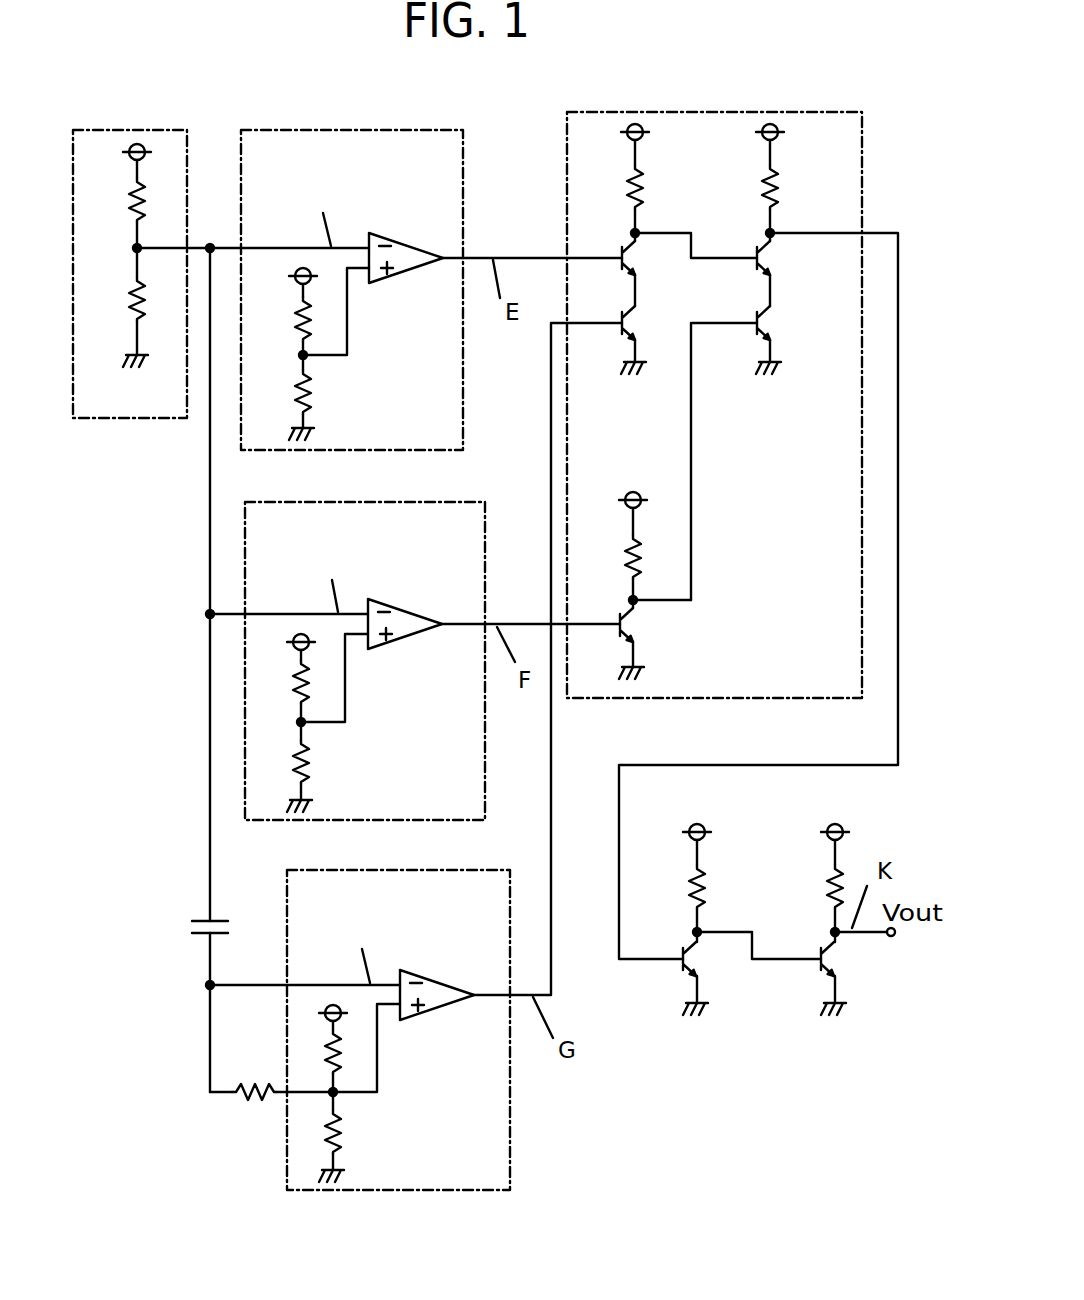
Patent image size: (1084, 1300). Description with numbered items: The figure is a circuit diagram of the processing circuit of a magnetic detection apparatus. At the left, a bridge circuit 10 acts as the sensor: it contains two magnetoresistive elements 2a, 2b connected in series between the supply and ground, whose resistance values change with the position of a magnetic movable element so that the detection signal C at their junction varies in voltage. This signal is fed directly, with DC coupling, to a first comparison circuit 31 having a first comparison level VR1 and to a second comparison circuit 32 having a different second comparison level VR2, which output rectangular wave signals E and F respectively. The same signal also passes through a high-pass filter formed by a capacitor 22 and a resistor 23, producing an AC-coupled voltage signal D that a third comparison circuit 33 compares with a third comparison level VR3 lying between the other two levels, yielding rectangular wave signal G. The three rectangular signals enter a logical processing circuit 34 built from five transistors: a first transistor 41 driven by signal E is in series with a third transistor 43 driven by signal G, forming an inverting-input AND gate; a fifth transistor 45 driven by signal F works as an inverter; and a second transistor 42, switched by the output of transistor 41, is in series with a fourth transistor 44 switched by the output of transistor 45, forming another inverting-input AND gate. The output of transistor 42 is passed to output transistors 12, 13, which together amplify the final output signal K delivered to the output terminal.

The bridge circuit 10 is at (122, 130).
The magnetoresistive element 2a is at (118, 200).
The magnetoresistive element 2b is at (118, 299).
The first comparison circuit 31 is at (335, 122).
The second comparison circuit 32 is at (380, 497).
The third comparison circuit 33 is at (403, 868).
The logical processing circuit 34 is at (677, 110).
The first comparison level VR1 is at (347, 320).
The second comparison level VR2 is at (345, 705).
The third comparison level VR3 is at (377, 1075).
The first transistor 41 is at (637, 258).
The second transistor 42 is at (777, 257).
The third transistor 43 is at (643, 327).
The fourth transistor 44 is at (778, 323).
The fifth transistor 45 is at (640, 625).
The capacitor 22 is at (190, 940).
The resistor 23 is at (247, 1107).
The output transistor 12 is at (700, 962).
The output transistor 13 is at (838, 962).